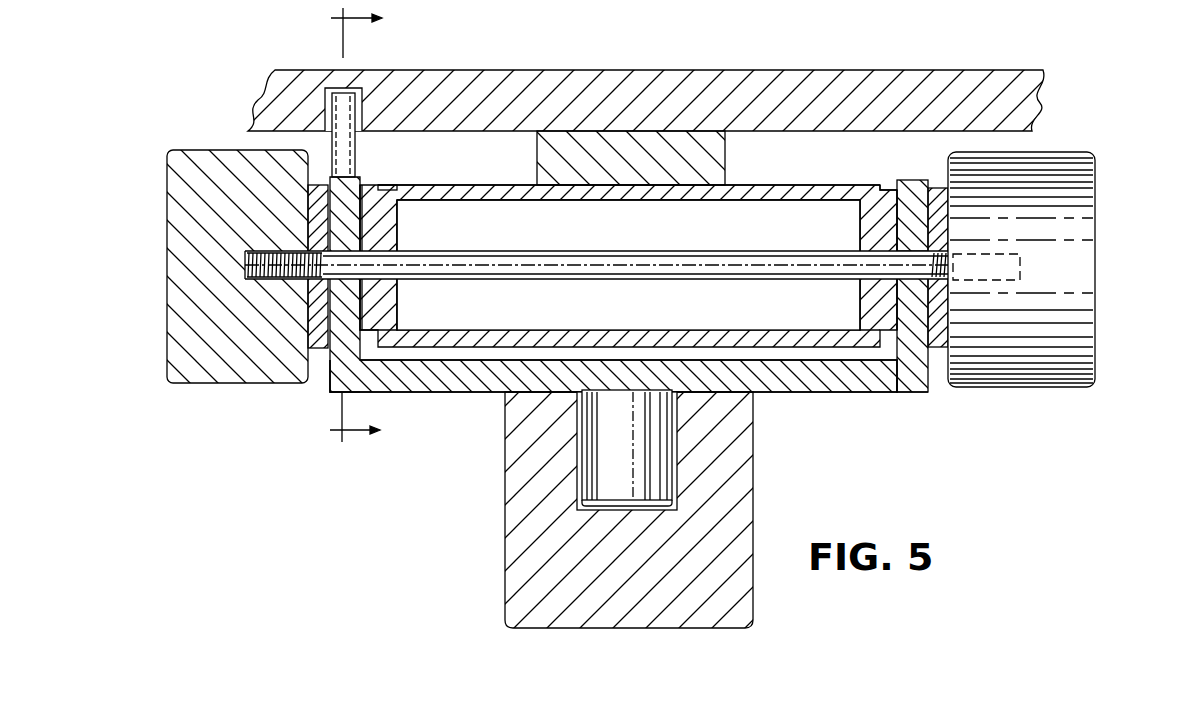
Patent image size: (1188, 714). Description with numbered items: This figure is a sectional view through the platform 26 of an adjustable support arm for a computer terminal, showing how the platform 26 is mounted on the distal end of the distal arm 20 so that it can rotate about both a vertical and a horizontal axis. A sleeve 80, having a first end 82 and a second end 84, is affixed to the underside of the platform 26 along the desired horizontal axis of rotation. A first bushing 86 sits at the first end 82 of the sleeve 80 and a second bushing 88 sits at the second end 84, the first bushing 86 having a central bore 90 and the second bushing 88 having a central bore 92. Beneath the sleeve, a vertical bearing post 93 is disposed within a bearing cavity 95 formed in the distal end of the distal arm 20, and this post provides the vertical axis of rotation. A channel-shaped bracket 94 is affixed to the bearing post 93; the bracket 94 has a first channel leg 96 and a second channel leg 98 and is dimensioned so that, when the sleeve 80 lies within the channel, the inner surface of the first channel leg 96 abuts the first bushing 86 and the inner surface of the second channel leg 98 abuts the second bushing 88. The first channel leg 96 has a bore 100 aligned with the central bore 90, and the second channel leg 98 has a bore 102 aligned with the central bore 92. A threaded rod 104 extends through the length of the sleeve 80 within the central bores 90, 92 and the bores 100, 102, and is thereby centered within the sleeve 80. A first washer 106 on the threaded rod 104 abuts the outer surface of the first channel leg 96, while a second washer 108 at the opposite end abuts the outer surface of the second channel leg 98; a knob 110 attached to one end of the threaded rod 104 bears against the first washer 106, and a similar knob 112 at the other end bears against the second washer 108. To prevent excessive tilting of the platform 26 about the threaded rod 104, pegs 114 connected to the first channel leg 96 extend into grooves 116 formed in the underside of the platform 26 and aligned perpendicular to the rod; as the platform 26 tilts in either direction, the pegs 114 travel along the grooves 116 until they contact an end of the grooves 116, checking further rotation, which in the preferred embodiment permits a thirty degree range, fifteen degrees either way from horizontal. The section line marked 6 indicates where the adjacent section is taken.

The distal arm 20 is at (755, 447).
The platform 26 is at (487, 70).
The sleeve 80 is at (521, 185).
The first end 82 is at (383, 197).
The second end 84 is at (878, 188).
The first bushing 86 is at (370, 186).
The second bushing 88 is at (900, 181).
The central bore 90 is at (398, 244).
The central bore 92 is at (883, 248).
The vertical bearing post 93 is at (663, 480).
The channel-shaped bracket 94 is at (497, 380).
The bearing cavity 95 is at (577, 460).
The first channel leg 96 is at (325, 380).
The second channel leg 98 is at (932, 385).
The bore 100 is at (365, 232).
The bore 102 is at (912, 242).
The threaded rod 104 is at (567, 251).
The first washer 106 is at (325, 185).
The second washer 108 is at (937, 347).
The knob 110 is at (166, 330).
The knob 112 is at (1093, 323).
The pegs 114 is at (332, 110).
The grooves 116 is at (336, 88).
The section line 6- 6 is at (345, 222).